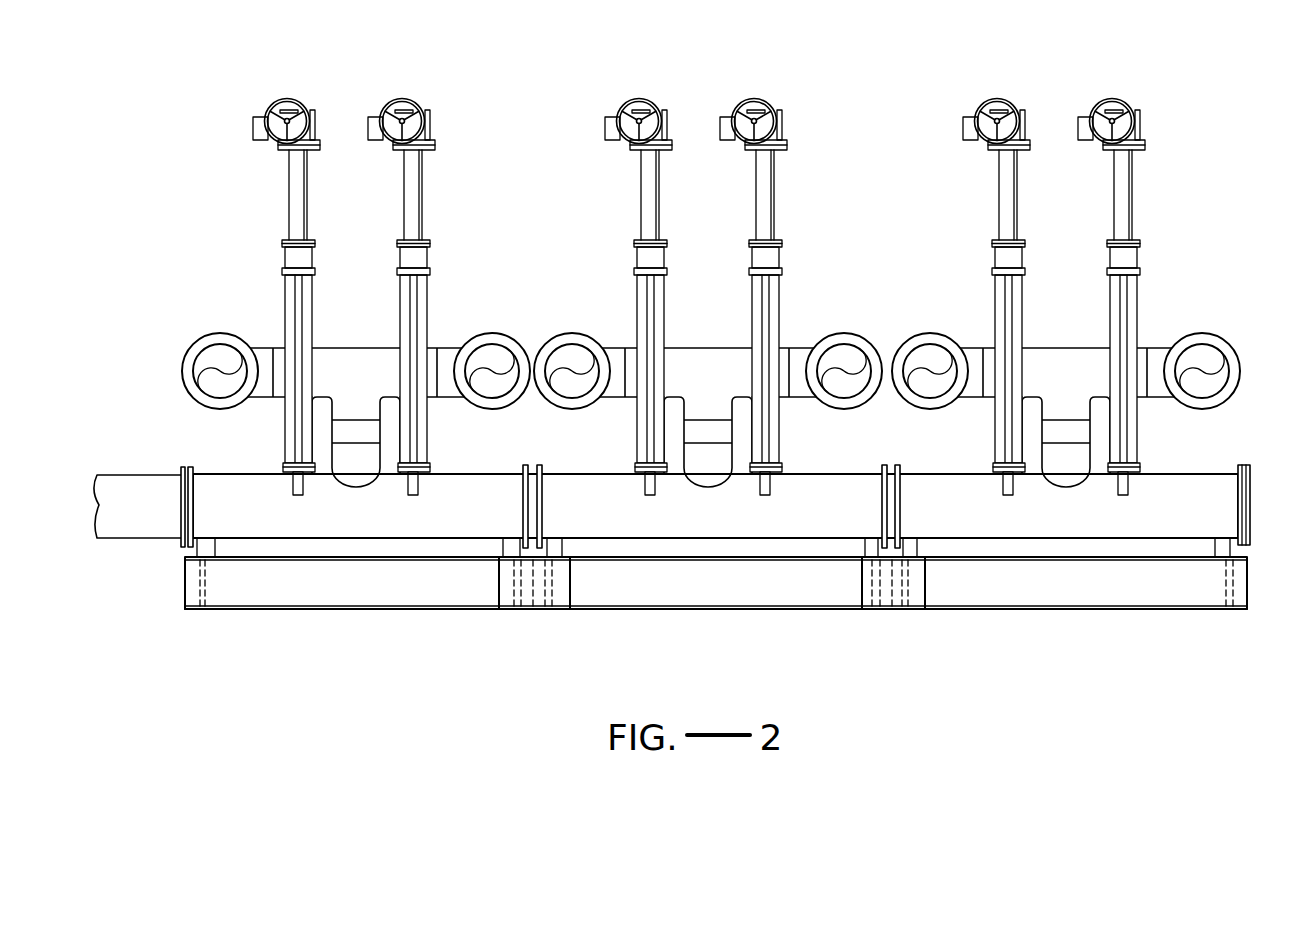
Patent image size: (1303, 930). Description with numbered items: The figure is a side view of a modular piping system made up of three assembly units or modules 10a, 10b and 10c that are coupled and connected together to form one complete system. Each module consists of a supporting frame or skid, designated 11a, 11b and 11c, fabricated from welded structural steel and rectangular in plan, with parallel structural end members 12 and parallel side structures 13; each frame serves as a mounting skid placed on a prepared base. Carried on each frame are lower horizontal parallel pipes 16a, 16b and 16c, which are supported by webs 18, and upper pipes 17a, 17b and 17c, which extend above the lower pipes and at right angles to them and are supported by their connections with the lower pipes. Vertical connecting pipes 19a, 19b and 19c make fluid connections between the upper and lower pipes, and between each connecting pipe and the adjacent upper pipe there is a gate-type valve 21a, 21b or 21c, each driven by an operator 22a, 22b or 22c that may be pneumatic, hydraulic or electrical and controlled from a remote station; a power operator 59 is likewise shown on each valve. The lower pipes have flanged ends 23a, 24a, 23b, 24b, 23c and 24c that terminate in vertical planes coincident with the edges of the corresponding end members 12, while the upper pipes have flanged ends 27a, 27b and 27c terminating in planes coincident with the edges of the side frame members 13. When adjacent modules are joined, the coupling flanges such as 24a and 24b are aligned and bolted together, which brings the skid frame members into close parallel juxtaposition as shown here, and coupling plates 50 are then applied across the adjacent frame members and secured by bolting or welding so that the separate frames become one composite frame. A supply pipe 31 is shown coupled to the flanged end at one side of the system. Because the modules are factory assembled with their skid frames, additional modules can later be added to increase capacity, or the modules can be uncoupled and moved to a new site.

The assembly module 10a is at (441, 610).
The assembly module 10b is at (662, 610).
The assembly module 10c is at (1031, 610).
The supporting frame 11a is at (345, 612).
The supporting frame 11b is at (765, 612).
The supporting frame 11c is at (1103, 602).
The structural end member 12 is at (183, 580).
The side structure 13 is at (278, 600).
The horizontal pipe 16a is at (358, 532).
The horizontal pipe 16b is at (745, 532).
The horizontal pipe 16c is at (1068, 527).
The upper pipe 17a is at (263, 350).
The upper pipe 17b is at (702, 331).
The upper pipe 17c is at (1059, 331).
The web 18 is at (212, 553).
The vertical connecting pipe 19a is at (368, 406).
The vertical connecting pipe 19b is at (737, 442).
The vertical connecting pipe 19c is at (1095, 442).
The valve 21a is at (400, 286).
The valve 21b is at (708, 380).
The valve 21c is at (1066, 380).
The valve operator 22a is at (408, 185).
The valve operator 22b is at (696, 192).
The valve operator 22c is at (1054, 192).
The pipe end 23a is at (191, 467).
The pipe end 23b is at (543, 467).
The pipe end 23c is at (898, 467).
The pipe end 24a is at (524, 466).
The pipe end 24b is at (883, 466).
The pipe end 24c is at (1239, 466).
The pipe end 27a is at (221, 333).
The pipe end 27b is at (704, 350).
The pipe end 27c is at (1062, 350).
The supply pipe 31 is at (124, 487).
The coupling plate 50 is at (509, 595).
The power operator 59 is at (390, 100).